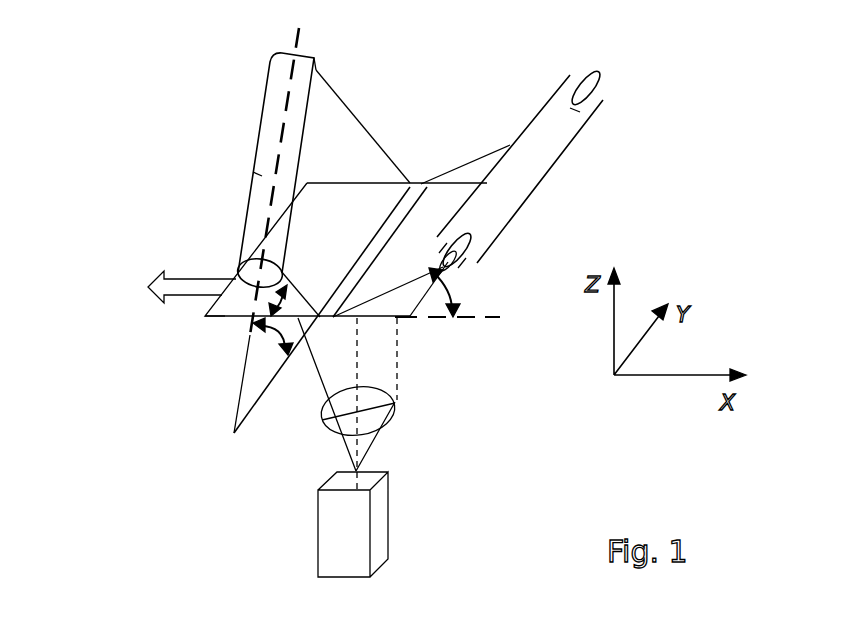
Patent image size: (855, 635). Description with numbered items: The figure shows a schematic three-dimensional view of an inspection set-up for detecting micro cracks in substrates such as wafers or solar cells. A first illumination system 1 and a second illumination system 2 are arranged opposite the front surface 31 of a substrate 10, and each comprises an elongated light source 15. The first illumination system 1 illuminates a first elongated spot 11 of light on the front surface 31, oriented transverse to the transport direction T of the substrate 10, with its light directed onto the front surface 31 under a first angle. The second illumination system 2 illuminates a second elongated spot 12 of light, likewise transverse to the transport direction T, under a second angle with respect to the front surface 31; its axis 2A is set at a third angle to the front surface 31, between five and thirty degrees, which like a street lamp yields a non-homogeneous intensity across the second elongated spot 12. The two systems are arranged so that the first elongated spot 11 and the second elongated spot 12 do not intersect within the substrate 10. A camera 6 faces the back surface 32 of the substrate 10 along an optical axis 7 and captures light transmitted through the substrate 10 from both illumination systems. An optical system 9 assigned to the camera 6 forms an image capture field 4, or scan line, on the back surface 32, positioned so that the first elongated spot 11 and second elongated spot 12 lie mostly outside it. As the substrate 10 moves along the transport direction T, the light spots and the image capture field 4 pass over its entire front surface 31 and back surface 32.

The first illumination system 1 is at (566, 168).
The second illumination system 2 is at (250, 131).
The axis of second illumination system 2A is at (306, 84).
The front surface 31 is at (356, 180).
The back surface 32 is at (216, 324).
The image capture field 4 is at (364, 233).
The camera 6 is at (378, 512).
The optical axis 7 is at (357, 360).
The optical system 9 is at (375, 417).
The substrate 10 is at (337, 213).
The first elongated spot of light 11 is at (418, 197).
The second elongated spot of light 12 is at (389, 217).
The elongated light source 15 is at (266, 172).
The direction of transport T is at (190, 283).